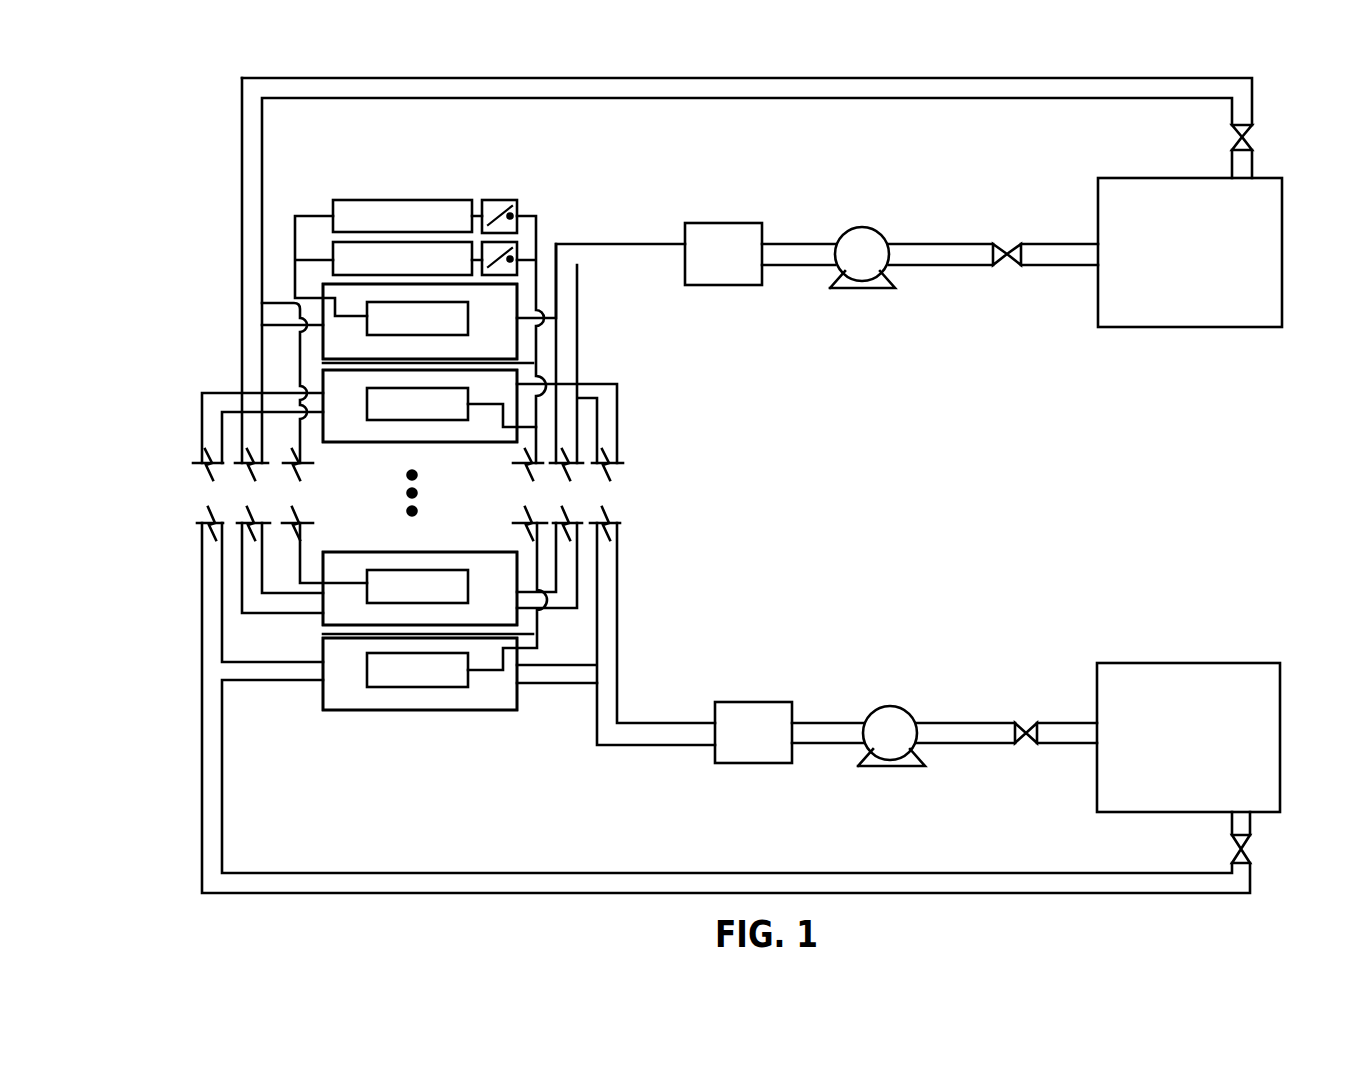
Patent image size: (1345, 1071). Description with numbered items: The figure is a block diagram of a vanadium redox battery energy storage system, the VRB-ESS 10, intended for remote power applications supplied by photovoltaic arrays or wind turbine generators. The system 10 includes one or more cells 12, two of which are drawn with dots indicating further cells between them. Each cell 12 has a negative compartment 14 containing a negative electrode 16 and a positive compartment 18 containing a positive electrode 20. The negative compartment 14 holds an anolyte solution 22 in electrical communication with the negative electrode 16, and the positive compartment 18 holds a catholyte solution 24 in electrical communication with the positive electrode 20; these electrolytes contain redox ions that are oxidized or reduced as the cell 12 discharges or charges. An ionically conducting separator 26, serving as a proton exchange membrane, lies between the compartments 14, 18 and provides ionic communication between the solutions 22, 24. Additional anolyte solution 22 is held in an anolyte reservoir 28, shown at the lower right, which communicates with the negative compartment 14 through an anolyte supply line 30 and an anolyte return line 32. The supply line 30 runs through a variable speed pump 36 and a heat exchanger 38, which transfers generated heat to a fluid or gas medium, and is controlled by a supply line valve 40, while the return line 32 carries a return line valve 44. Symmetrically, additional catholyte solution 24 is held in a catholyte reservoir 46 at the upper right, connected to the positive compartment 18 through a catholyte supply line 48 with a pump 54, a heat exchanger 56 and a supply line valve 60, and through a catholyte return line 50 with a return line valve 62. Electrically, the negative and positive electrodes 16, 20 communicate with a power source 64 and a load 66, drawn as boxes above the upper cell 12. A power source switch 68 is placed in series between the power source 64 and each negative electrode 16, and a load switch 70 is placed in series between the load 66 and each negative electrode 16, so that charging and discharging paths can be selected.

The VRB-ESS 10 is at (186, 98).
The cell 12 is at (436, 458).
The negative compartment 14 is at (507, 399).
The negative electrode 16 is at (431, 418).
The positive compartment 18 is at (509, 331).
The positive electrode 20 is at (431, 332).
The anolyte solution 22 is at (355, 414).
The catholyte solution 24 is at (355, 353).
The ionically conducting separator 26 is at (533, 363).
The anolyte reservoir 28 is at (1200, 754).
The anolyte supply line 30 is at (636, 732).
The anolyte return line 32 is at (215, 712).
The pump 36 is at (903, 747).
The heat exchanger 38 is at (766, 749).
The supply line valve 40 is at (1027, 742).
The return line valve 44 is at (1255, 847).
The catholyte reservoir 46 is at (1206, 268).
The catholyte supply line 48 is at (1057, 244).
The catholyte return line 50 is at (242, 282).
The pump 54 is at (875, 268).
The heat exchanger 56 is at (735, 268).
The supply line valve 60 is at (1009, 268).
The return line valve 62 is at (1255, 135).
The power source 64 is at (416, 271).
The load 66 is at (416, 228).
The power source switch 68 is at (522, 245).
The load switch 70 is at (522, 203).